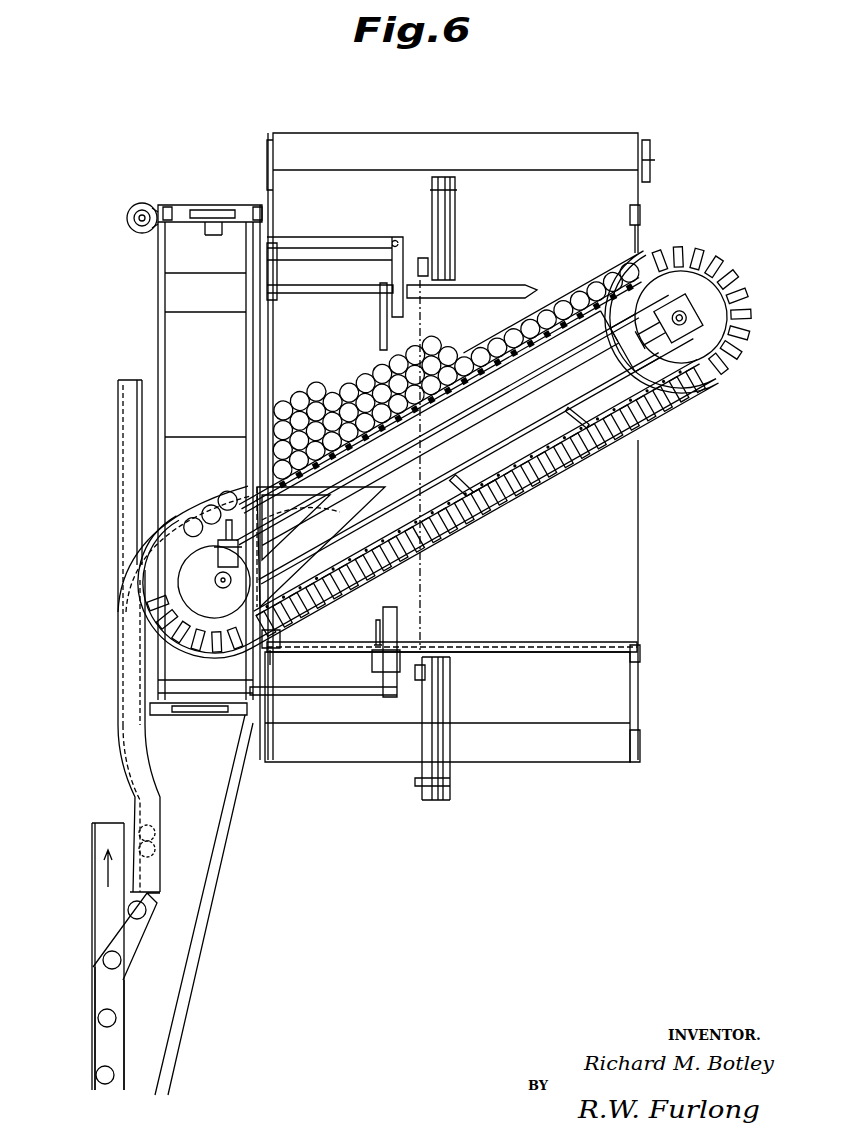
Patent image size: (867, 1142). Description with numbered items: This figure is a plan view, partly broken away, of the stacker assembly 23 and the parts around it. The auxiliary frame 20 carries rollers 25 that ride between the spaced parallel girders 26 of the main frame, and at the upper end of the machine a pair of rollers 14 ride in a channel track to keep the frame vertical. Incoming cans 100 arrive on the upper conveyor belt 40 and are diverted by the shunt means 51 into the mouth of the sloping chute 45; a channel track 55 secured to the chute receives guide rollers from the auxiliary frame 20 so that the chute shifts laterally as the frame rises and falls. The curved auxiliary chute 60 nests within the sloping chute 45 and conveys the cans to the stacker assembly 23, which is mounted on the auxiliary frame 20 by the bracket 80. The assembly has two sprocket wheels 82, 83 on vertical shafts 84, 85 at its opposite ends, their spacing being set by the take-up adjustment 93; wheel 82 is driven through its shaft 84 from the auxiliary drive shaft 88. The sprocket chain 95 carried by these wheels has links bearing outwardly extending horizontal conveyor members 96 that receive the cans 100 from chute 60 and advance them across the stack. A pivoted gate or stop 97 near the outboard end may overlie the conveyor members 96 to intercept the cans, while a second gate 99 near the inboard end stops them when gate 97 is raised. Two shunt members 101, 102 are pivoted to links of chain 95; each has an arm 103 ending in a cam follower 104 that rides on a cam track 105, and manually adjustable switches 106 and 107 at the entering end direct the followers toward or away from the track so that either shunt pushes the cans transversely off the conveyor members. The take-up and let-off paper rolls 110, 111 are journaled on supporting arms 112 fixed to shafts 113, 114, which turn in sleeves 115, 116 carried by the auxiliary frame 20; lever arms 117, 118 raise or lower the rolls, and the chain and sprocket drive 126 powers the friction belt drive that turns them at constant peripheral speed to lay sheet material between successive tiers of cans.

The rollers 14 is at (138, 204).
The auxiliary frame 20 is at (160, 350).
The stacker assembly 23 is at (758, 246).
The rollers 25 is at (212, 210).
The girders 26 is at (170, 207).
The upper conveyor belt 40 is at (100, 838).
The sloping chute 45 is at (150, 768).
The shunt means 51 is at (108, 932).
The channel track 55 is at (120, 444).
The curved auxiliary chute 60 is at (122, 575).
The bracket 80 is at (302, 551).
The sprocket wheel 82 is at (205, 640).
The sprocket wheel 83 is at (720, 370).
The vertical shaft 84 is at (206, 598).
The vertical shaft 85 is at (675, 312).
The auxiliary drive shaft 88 is at (210, 508).
The take-up adjustment 93 is at (640, 335).
The sprocket chain 95 is at (582, 350).
The conveyor members 96 is at (582, 460).
The gate or stop 97 is at (645, 207).
The second gate 99 is at (285, 640).
The cans 100 is at (96, 1075).
The shunt member 101 is at (448, 360).
The shunt member 102 is at (452, 540).
The arm 103 is at (515, 385).
The cam follower 104 is at (445, 500).
The cam track 105 is at (528, 430).
The manually adjustable switch 106 is at (300, 508).
The switch 107 is at (580, 410).
The paper roll 110 is at (588, 133).
The paper roll 111 is at (525, 762).
The supporting arms 112 is at (650, 160).
The shaft 113 is at (340, 292).
The shaft 114 is at (372, 662).
The sleeve 115 is at (482, 285).
The sleeve 116 is at (505, 642).
The lever arm 117 is at (378, 322).
The lever arm 118 is at (376, 620).
The chain and sprocket drive 126 is at (422, 610).